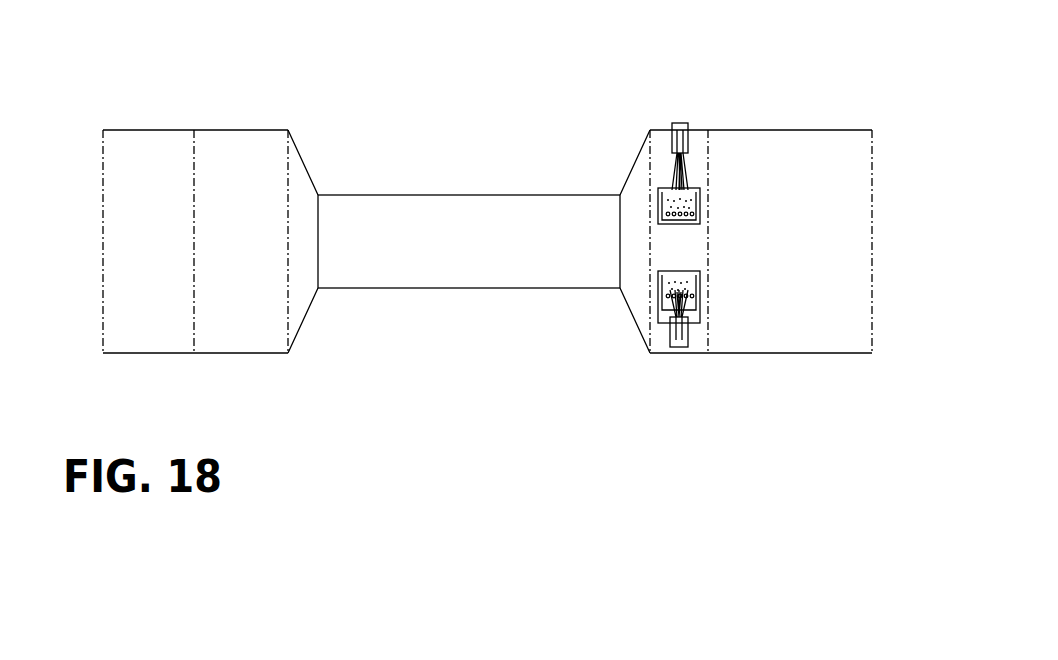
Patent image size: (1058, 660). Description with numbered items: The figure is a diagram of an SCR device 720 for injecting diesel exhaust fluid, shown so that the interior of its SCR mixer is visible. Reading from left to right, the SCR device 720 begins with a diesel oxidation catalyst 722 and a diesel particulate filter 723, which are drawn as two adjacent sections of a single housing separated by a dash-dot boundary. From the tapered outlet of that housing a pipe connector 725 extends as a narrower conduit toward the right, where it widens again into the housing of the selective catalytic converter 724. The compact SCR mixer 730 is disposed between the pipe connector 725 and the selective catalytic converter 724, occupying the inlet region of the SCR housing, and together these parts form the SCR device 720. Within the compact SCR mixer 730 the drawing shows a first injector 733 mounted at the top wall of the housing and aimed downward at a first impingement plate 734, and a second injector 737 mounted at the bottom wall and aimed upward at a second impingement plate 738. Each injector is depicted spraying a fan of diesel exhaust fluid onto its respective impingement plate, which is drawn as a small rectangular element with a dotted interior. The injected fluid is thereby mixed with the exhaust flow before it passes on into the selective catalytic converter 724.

The SCR device 720 is at (118, 396).
The diesel oxidation catalyst 722 is at (143, 129).
The diesel particulate filter 723 is at (236, 129).
The selective catalytic converter 724 is at (842, 129).
The pipe connector 725 is at (443, 194).
The compact SCR mixer 730 is at (672, 364).
The first injector 733 is at (685, 128).
The first impingement plate 734 is at (692, 195).
The second injector 737 is at (687, 343).
The second impingement plate 738 is at (688, 278).